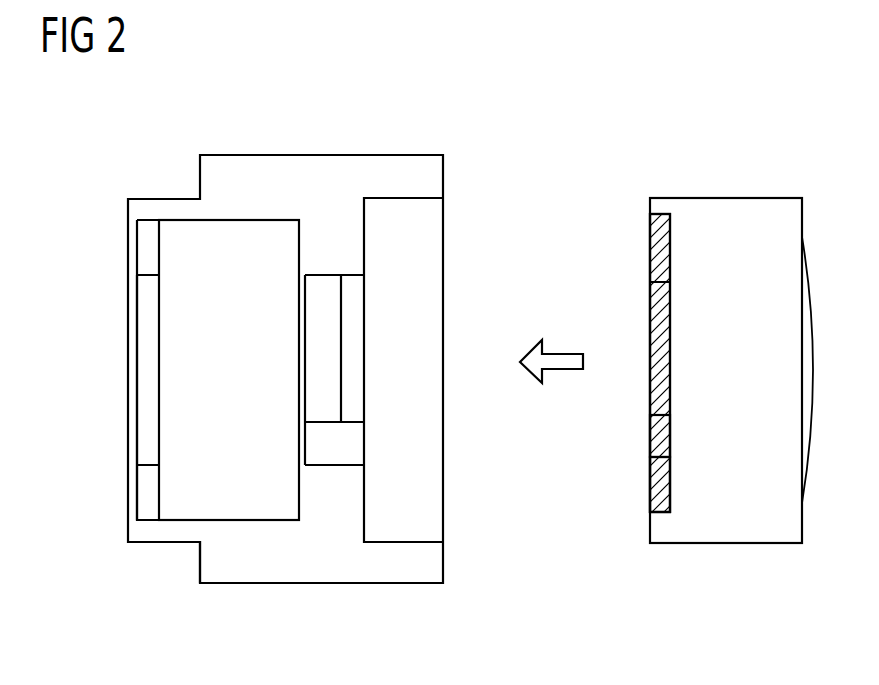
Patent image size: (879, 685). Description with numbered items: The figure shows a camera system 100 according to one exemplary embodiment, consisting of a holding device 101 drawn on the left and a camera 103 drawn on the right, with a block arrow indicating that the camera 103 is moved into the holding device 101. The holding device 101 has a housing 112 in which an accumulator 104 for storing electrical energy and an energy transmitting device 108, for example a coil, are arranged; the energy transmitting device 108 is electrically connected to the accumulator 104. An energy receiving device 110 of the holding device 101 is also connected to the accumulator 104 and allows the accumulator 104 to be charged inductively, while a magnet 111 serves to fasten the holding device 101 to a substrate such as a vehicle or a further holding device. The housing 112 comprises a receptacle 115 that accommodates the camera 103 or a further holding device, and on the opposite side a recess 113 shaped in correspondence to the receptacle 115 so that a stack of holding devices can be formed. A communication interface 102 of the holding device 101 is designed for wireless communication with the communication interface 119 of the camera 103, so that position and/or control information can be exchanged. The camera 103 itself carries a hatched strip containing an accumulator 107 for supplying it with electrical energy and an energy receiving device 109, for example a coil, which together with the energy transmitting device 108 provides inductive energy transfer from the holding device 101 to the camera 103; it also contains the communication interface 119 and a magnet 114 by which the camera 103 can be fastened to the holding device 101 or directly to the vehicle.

The camera system 100 is at (668, 60).
The holding device 101 is at (441, 116).
The communication interface 102 is at (333, 447).
The camera 103 is at (736, 225).
The accumulator 104 is at (225, 262).
The accumulator 107 is at (655, 303).
The energy receiving device 109 is at (660, 363).
The energy transmitting device 108 is at (323, 323).
The energy receiving device 110 is at (146, 365).
The magnet 111 is at (146, 250).
The housing 112 is at (327, 188).
The recess 113 is at (162, 560).
The magnet 114 is at (660, 483).
The receptacle 115 is at (418, 455).
The communication interface 119 is at (660, 424).